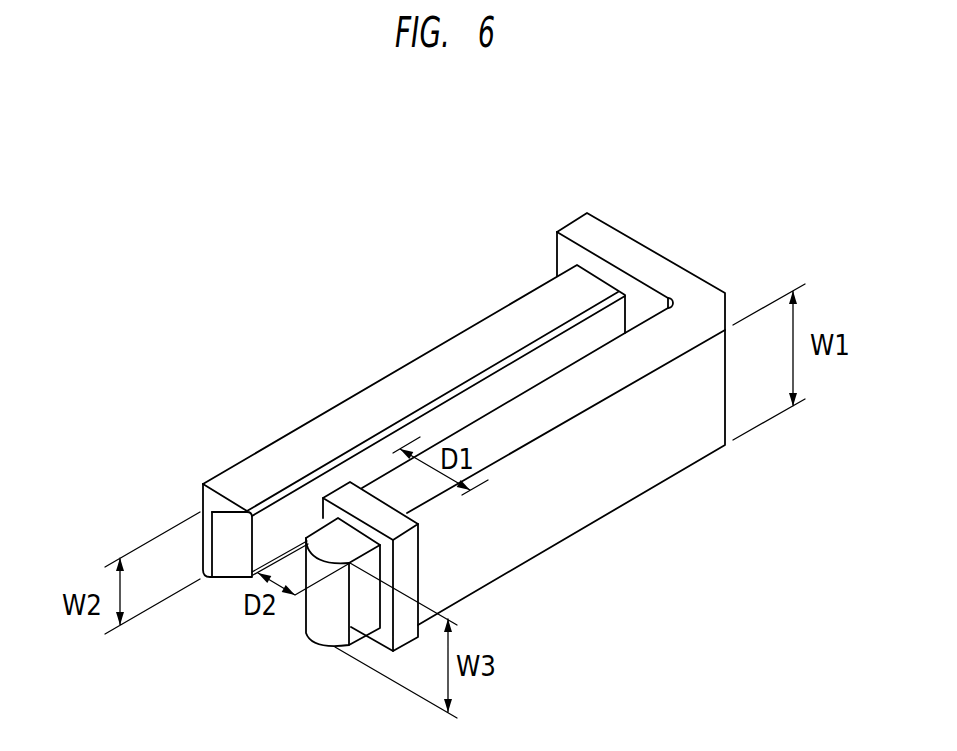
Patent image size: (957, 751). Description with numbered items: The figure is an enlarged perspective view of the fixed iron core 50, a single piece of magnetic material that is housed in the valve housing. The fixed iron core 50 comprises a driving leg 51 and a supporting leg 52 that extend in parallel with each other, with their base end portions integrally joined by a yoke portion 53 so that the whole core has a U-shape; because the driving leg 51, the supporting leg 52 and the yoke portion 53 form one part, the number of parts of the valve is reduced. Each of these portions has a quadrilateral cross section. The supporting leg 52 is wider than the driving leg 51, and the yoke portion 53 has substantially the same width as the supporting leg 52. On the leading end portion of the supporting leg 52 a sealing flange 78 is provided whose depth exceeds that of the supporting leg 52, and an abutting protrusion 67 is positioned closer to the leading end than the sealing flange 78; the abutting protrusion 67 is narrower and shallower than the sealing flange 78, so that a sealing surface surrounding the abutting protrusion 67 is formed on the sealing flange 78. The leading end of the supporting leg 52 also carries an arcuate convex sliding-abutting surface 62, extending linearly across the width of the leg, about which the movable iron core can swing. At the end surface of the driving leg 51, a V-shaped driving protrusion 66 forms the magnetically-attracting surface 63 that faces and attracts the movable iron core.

The fixed iron core 50 is at (693, 229).
The driving leg 51 is at (418, 374).
The supporting leg 52 is at (590, 493).
The yoke portion 53 is at (603, 234).
The sliding-abutting surface 62 is at (313, 632).
The magnetically-attracting surface 63 is at (221, 570).
The driving protrusion 66 is at (222, 503).
The abutting protrusion 67 is at (360, 628).
The sealing flange 78 is at (413, 573).